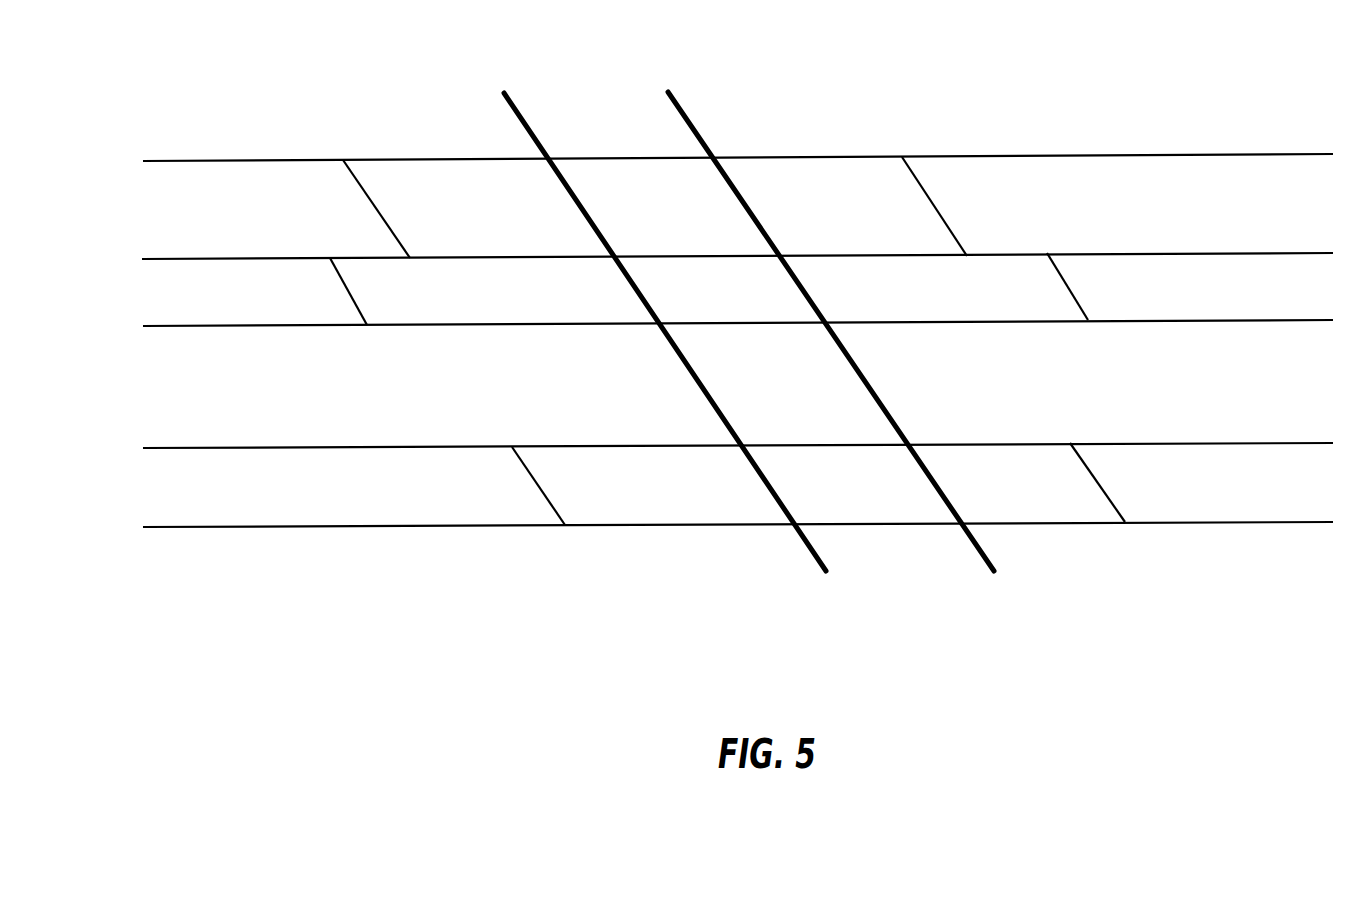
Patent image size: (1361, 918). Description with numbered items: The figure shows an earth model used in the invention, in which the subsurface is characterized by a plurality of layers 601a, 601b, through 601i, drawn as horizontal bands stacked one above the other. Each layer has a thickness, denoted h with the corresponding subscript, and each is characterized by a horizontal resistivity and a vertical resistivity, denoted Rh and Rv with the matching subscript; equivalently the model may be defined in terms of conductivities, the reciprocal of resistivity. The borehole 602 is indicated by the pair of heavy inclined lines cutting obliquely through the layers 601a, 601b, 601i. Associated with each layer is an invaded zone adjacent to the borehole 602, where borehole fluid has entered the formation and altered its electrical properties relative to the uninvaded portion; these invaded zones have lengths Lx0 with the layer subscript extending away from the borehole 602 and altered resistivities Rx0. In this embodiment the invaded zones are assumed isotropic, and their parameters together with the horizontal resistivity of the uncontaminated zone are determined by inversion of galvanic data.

The layer 601a is at (695, 206).
The layer 601b is at (695, 289).
The layer 601i is at (700, 485).
The borehole 602 is at (749, 299).